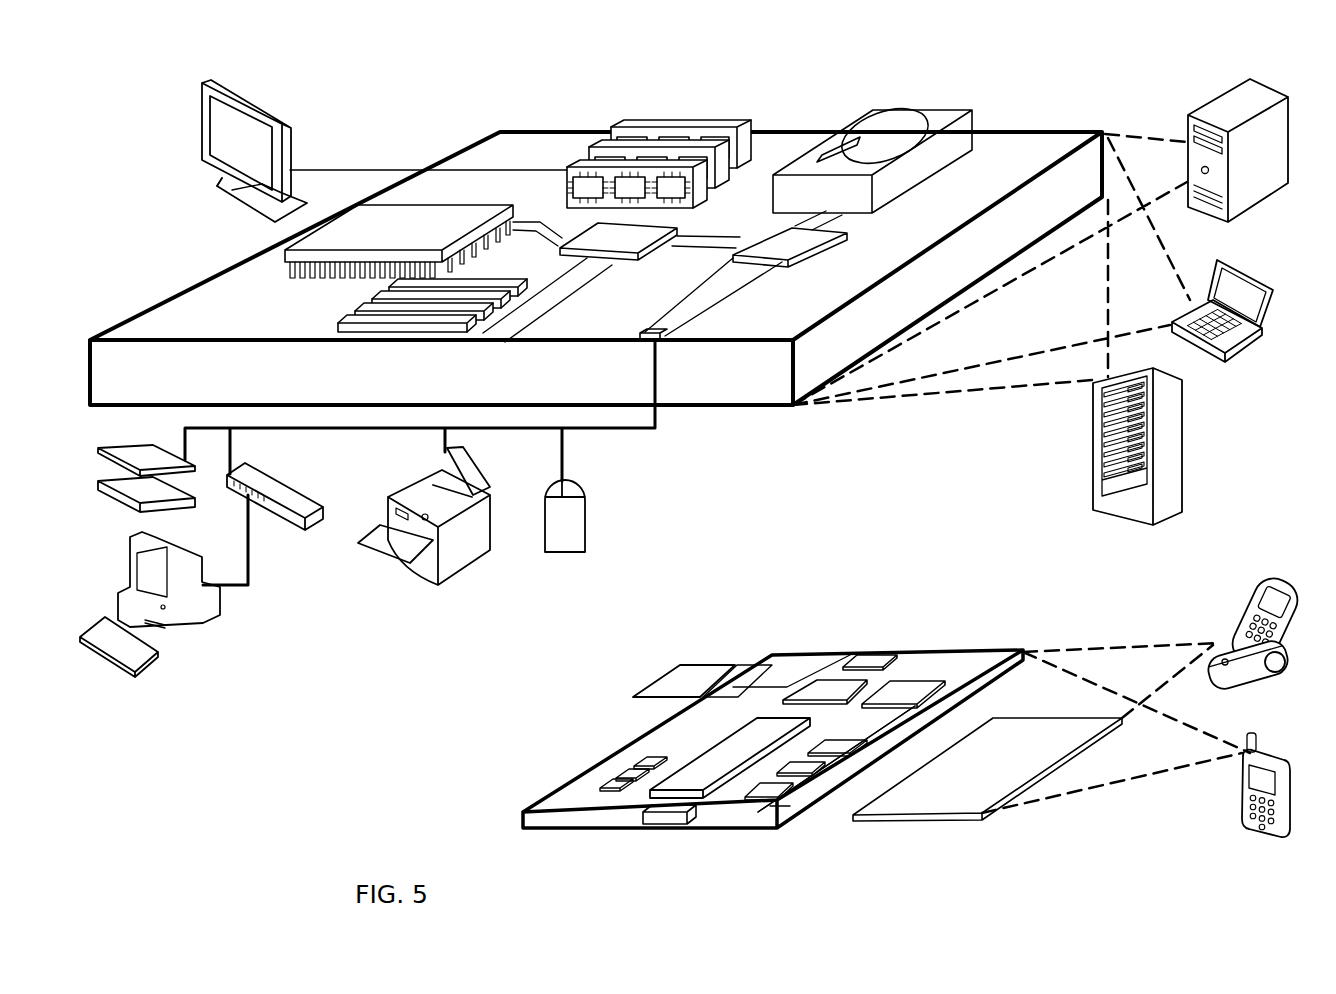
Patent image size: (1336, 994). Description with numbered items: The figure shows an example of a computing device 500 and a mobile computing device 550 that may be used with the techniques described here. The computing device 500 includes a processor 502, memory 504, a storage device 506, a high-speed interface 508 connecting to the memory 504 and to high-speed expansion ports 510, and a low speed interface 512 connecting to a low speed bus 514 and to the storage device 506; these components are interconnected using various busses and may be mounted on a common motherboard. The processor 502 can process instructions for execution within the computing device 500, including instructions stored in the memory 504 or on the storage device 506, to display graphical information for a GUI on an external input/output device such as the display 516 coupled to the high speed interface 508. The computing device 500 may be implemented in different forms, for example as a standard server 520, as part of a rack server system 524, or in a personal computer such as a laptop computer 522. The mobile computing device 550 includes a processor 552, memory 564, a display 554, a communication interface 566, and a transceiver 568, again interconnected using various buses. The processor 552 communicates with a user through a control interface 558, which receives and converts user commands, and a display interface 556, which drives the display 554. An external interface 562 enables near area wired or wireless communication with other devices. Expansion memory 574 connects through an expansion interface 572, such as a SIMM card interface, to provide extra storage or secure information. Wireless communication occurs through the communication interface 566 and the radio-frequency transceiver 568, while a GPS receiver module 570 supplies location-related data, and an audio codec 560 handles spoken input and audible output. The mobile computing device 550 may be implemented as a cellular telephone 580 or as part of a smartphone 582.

The computing device 500 is at (415, 106).
The processor 502 is at (283, 257).
The memory 504 is at (628, 124).
The storage device 506 is at (858, 120).
The high-speed interface 508 is at (592, 235).
The high-speed expansion ports 510 is at (357, 307).
The low speed interface 512 is at (790, 240).
The low speed bus 514 is at (667, 344).
The display 516 is at (205, 90).
The standard server 520 is at (1187, 117).
The laptop computer 522 is at (1217, 261).
The rack server system 524 is at (1092, 470).
The mobile computing device 550 is at (752, 624).
The processor 552 is at (680, 800).
The display 554 is at (982, 815).
The display interface 556 is at (783, 823).
The control interface 558 is at (820, 797).
The audio codec 560 is at (837, 753).
The external interface 562 is at (667, 823).
The memory 564 is at (600, 777).
The communication interface 566 is at (825, 688).
The transceiver 568 is at (907, 690).
The GPS receiver module 570 is at (861, 655).
The expansion interface 572 is at (745, 658).
The expansion memory 574 is at (673, 662).
The cellular telephone 580 is at (1270, 588).
The smartphone 582 is at (1250, 731).